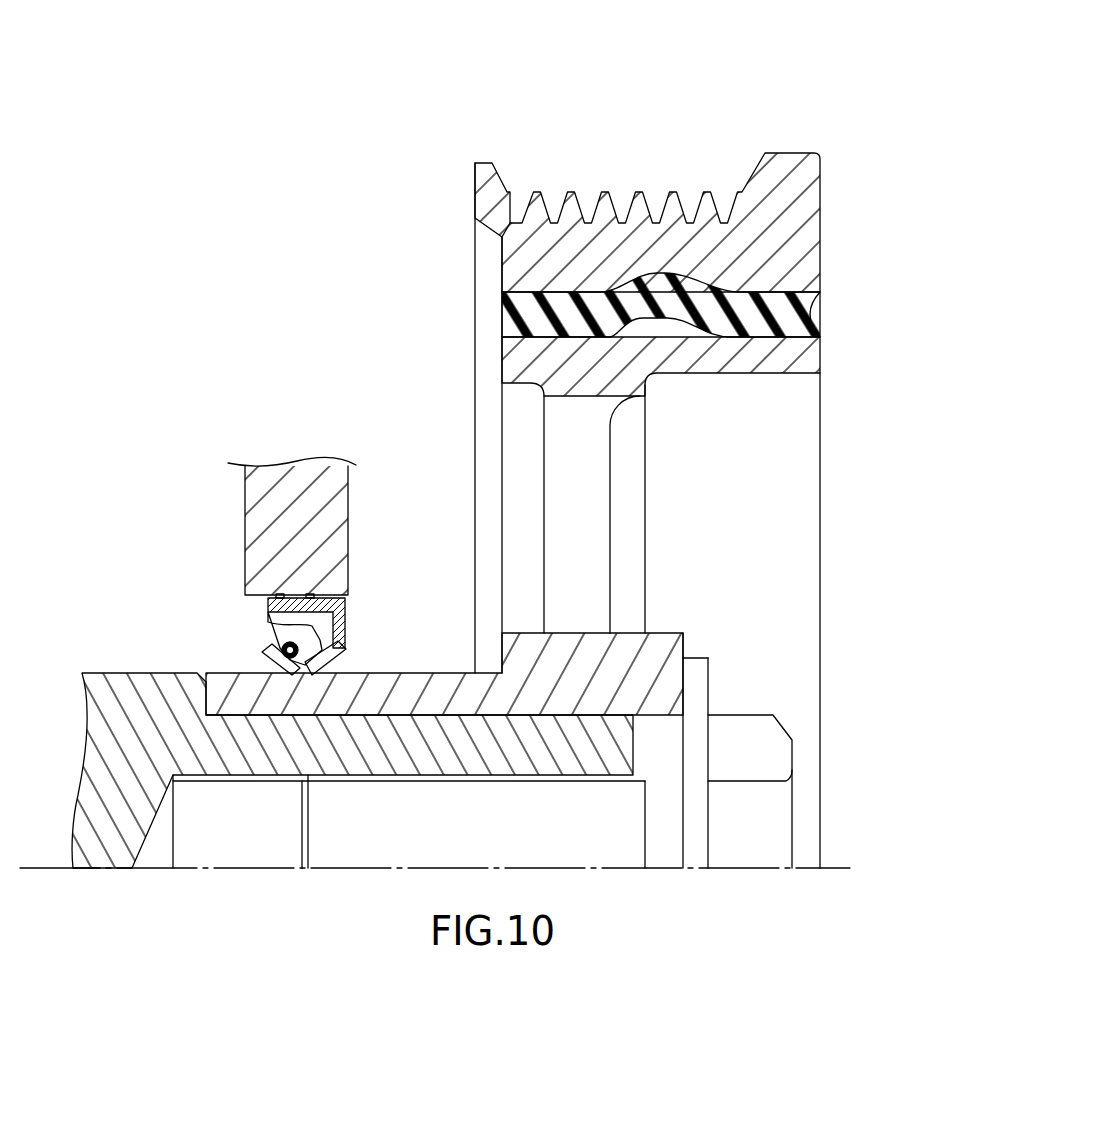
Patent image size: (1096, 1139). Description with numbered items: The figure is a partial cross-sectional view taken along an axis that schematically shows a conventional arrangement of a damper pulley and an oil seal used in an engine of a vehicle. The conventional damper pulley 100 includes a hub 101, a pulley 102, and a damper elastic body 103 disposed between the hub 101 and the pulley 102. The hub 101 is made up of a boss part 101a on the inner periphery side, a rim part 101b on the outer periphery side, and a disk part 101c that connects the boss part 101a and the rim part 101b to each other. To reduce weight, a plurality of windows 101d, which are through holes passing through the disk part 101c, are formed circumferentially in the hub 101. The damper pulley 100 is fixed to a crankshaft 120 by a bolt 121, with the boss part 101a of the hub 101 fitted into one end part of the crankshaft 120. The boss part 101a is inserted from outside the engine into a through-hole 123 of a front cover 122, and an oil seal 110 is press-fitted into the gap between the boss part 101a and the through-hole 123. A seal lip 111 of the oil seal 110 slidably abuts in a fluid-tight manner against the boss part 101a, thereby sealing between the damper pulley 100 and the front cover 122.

The damper pulley 100 is at (834, 112).
The hub 101 is at (684, 597).
The boss part 101a is at (666, 650).
The rim part 101b is at (789, 356).
The disk part 101c is at (636, 467).
The windows 101d is at (594, 548).
The pulley 102 is at (808, 233).
The damper elastic body 103 is at (788, 301).
The oil seal 110 is at (352, 612).
The seal lip 111 is at (275, 656).
The crankshaft 120 is at (107, 686).
The bolt 121 is at (750, 828).
The front cover 122 is at (236, 532).
The through-hole 123 is at (264, 608).